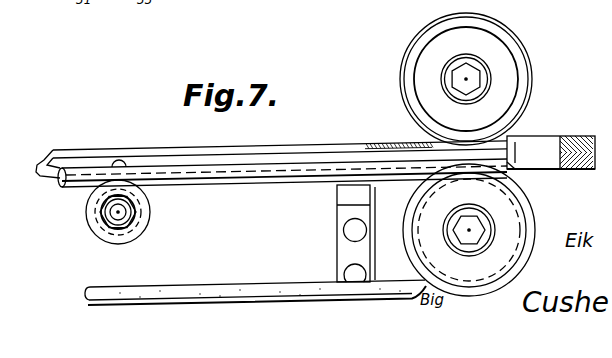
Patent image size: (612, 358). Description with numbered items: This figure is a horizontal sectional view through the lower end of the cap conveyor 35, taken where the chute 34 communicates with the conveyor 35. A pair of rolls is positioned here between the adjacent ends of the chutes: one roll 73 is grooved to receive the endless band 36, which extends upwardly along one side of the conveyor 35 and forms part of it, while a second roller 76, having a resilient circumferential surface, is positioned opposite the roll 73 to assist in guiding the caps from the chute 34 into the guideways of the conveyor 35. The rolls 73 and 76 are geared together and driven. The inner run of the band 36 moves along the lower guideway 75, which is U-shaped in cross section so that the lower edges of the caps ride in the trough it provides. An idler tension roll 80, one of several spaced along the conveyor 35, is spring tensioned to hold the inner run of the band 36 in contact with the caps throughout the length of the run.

The chute 34 is at (580, 133).
The conveyor 35 is at (308, 142).
The endless band 36 is at (278, 171).
The grooved roll 73 is at (526, 223).
The lower guideway 75 is at (205, 156).
The second roller 76 is at (517, 56).
The idler tension roll 80 is at (148, 227).